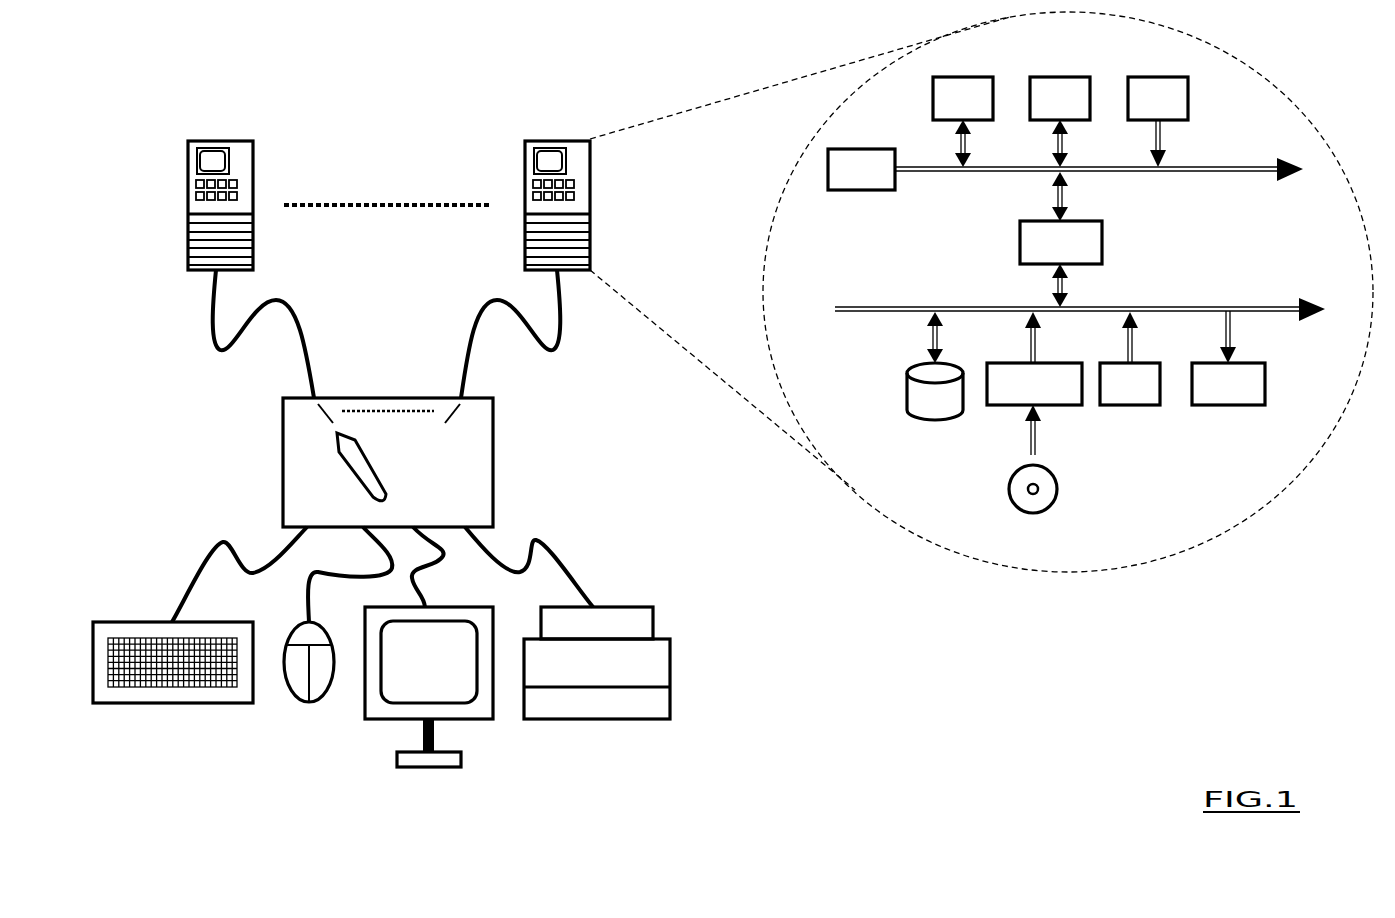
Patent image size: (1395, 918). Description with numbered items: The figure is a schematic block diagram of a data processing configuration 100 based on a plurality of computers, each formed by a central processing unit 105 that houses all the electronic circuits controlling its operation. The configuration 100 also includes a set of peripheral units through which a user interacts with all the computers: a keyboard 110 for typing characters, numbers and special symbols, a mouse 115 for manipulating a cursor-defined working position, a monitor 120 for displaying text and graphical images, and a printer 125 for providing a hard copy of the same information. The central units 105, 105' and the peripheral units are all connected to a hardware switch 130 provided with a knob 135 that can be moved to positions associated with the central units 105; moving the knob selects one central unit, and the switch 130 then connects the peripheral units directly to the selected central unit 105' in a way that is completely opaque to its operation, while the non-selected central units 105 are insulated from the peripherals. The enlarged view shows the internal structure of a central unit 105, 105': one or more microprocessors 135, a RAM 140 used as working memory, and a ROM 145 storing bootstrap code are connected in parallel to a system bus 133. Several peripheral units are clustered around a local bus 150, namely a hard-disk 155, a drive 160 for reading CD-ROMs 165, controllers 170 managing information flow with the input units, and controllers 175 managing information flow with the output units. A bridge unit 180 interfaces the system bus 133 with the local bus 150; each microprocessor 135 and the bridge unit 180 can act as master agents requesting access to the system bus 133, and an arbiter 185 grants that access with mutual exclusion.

The data processing configuration 100 is at (352, 76).
The central processing unit 105 is at (251, 249).
The selected central unit 105' is at (525, 249).
The keyboard 110 is at (113, 703).
The mouse 115 is at (323, 697).
The monitor 120 is at (465, 717).
The printer 125 is at (642, 717).
The hardware switch 130 is at (493, 430).
The system bus 133 is at (1182, 172).
The knob / microprocessor 135 is at (375, 470).
The RAM 140 is at (1040, 77).
The ROM 145 is at (1188, 92).
The local bus 150 is at (1210, 306).
The hard-disk 155 is at (945, 428).
The drive 160 is at (1043, 405).
The CD-ROM 165 is at (1052, 500).
The controller 170 is at (1135, 405).
The controller 175 is at (1230, 405).
The bridge unit 180 is at (1102, 238).
The arbiter 185 is at (838, 149).